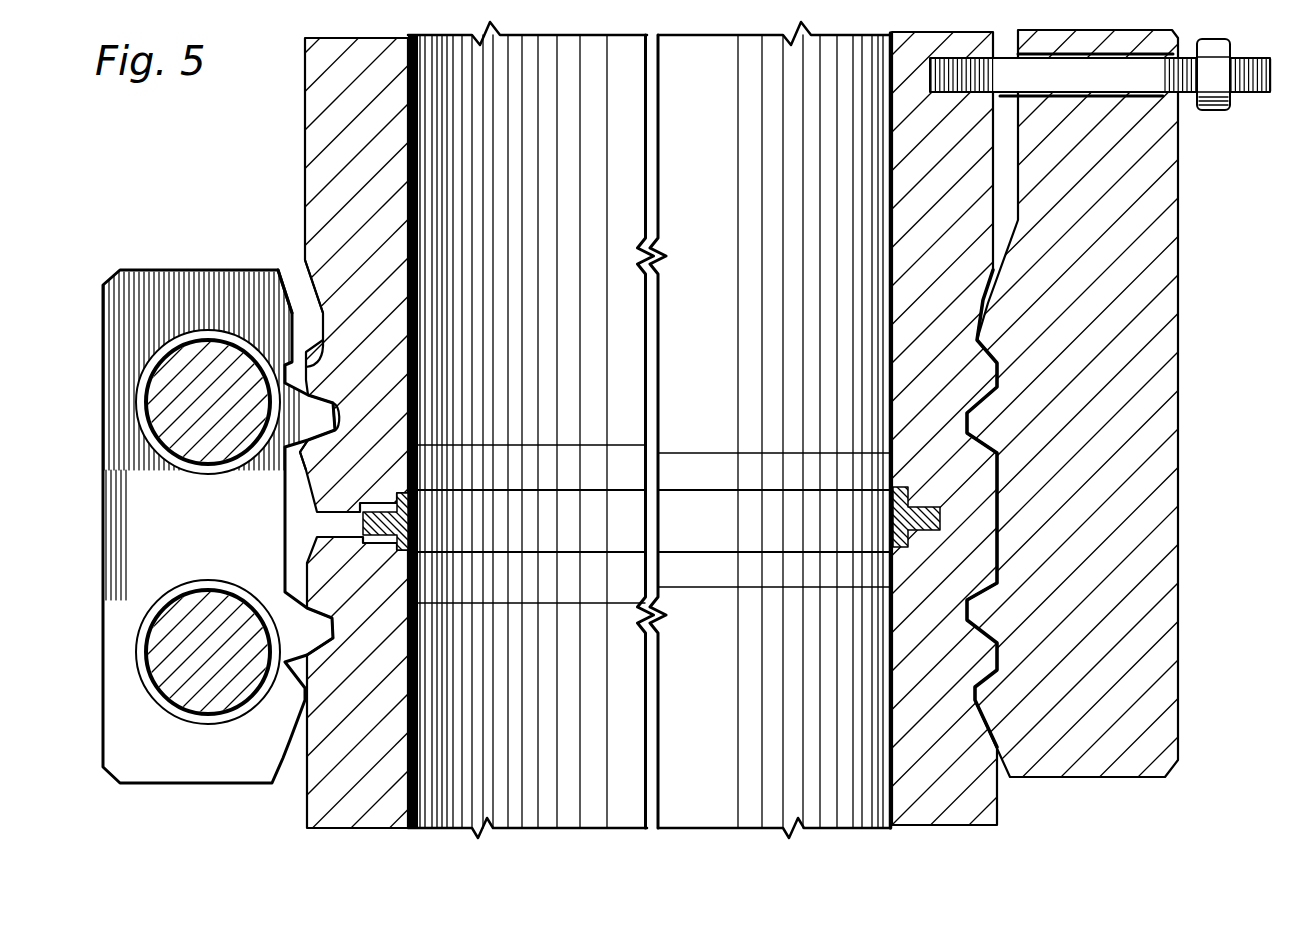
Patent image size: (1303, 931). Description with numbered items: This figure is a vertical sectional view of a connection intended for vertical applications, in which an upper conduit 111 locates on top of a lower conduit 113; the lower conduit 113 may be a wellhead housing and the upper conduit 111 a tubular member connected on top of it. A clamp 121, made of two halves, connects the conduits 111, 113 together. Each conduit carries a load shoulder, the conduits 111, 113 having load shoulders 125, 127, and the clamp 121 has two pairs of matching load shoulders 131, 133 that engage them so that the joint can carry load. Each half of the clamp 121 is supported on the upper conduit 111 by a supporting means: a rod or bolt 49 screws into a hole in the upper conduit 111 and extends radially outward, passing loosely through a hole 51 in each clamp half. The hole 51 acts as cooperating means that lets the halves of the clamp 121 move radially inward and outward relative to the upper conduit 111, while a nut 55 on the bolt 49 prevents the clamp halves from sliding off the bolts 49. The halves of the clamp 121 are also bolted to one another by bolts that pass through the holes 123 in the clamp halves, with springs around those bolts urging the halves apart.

The conduit 111 is at (373, 168).
The conduit 113 is at (358, 795).
The clamp 121 is at (207, 292).
The holes 123 is at (198, 582).
The load shoulder 125 is at (324, 403).
The load shoulder 127 is at (318, 300).
The load shoulder 131 is at (297, 448).
The load shoulder 133 is at (307, 368).
The bolt 49 is at (1134, 72).
The hole 51 is at (1126, 94).
The nut 55 is at (1213, 111).